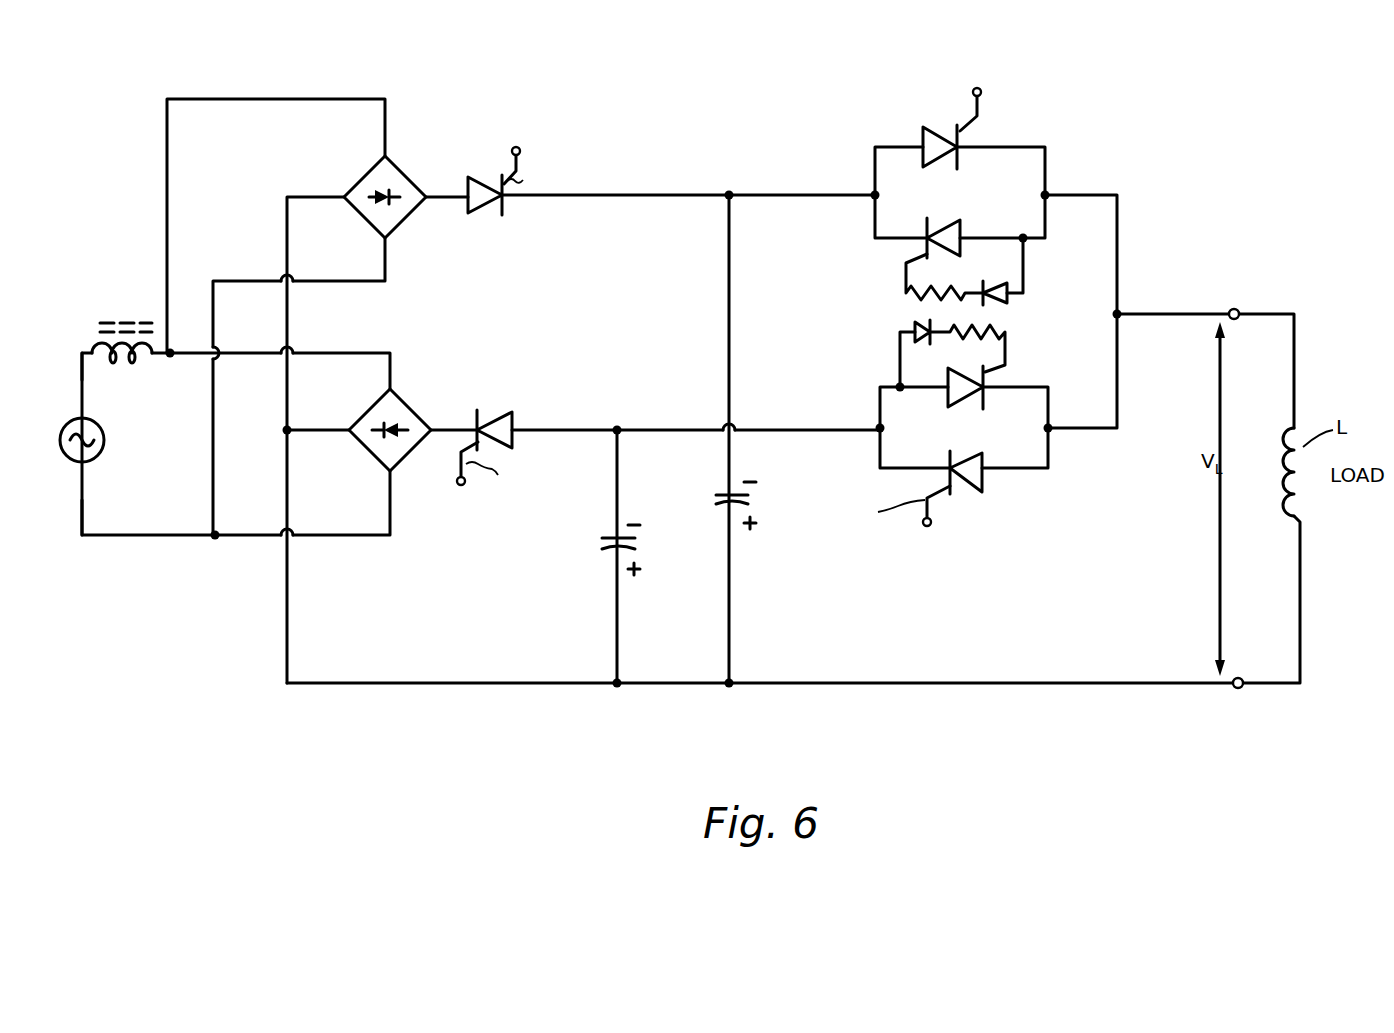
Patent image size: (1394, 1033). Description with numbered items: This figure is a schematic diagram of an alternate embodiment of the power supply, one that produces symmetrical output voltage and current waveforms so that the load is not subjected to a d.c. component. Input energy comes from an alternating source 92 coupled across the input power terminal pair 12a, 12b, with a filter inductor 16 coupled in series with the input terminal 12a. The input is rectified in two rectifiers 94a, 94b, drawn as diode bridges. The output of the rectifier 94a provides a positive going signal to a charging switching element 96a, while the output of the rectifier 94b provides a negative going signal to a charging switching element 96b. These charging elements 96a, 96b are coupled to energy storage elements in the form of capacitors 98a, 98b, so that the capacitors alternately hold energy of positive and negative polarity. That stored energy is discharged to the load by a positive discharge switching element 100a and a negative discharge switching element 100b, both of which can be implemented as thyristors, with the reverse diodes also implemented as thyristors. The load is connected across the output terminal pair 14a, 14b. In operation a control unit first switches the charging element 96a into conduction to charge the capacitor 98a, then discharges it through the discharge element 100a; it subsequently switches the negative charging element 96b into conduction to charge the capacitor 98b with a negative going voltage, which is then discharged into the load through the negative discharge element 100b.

The input power terminal 12a is at (92, 346).
The input power terminal 12b is at (120, 503).
The filter inductor 16 is at (122, 356).
The alternating source 92 is at (104, 447).
The rectifier 94a is at (402, 167).
The rectifier 94b is at (407, 403).
The charging switching element 96a is at (485, 183).
The charging switching element 96b is at (495, 413).
The capacitor 98a is at (722, 507).
The capacitor 98b is at (608, 553).
The positive discharge switching element 100a is at (925, 140).
The negative discharge switching element 100b is at (985, 478).
The output terminal 14a is at (1234, 308).
The output terminal 14b is at (1238, 689).